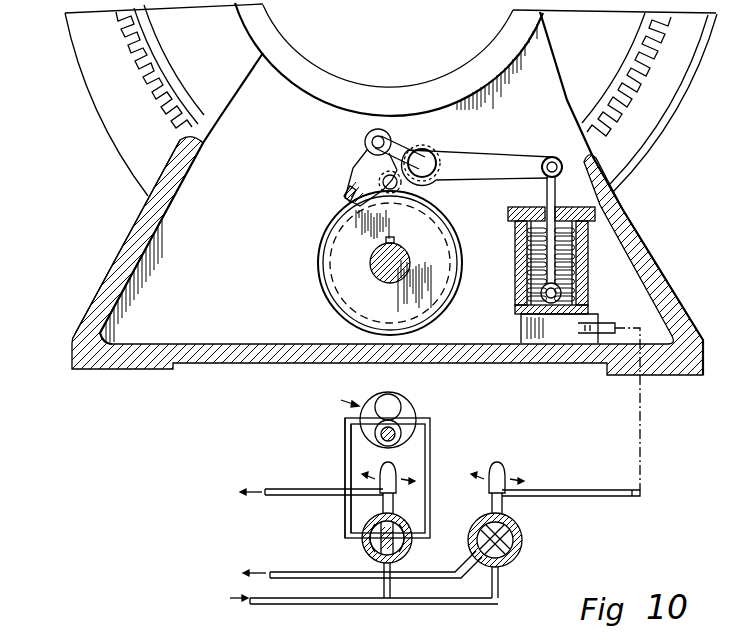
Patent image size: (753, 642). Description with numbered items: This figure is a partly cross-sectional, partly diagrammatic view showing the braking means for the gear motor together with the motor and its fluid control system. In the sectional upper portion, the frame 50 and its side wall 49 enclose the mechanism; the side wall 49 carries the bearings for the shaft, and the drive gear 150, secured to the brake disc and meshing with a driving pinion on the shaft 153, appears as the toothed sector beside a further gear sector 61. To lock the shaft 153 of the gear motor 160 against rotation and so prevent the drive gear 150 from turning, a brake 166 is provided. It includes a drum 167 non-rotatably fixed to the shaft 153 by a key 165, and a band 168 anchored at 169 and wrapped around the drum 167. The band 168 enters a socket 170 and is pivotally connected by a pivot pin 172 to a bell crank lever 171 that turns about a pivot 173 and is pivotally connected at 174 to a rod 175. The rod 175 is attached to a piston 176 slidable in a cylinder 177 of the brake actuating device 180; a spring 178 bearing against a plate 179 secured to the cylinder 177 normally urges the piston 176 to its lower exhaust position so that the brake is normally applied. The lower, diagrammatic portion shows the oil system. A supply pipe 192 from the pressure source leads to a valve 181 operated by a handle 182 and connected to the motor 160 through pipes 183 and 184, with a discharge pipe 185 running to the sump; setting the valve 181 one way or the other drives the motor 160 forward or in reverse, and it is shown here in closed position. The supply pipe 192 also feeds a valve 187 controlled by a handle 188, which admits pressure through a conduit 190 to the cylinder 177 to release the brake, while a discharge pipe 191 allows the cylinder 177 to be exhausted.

The side wall 49 is at (127, 262).
The frame 50 is at (143, 218).
The ring gear segment 61 is at (121, 100).
The drive gear 150 is at (157, 97).
The shaft 153 is at (405, 268).
The gear motor 160 is at (416, 403).
The key 165 is at (400, 238).
The brake 166 is at (380, 263).
The drum 167 is at (337, 287).
The band 168 is at (340, 195).
The anchor 169 is at (398, 187).
The socket 170 is at (387, 163).
The bell crank lever 171 is at (403, 148).
The pivot pin 172 is at (374, 138).
The pivot 173 is at (424, 162).
The pivotal connection 174 is at (553, 157).
The rod 175 is at (546, 193).
The piston 176 is at (520, 331).
The cylinder 177 is at (589, 268).
The spring 178 is at (571, 282).
The plate 179 is at (572, 208).
The brake actuating device 180 is at (587, 262).
The valve 181 is at (364, 549).
The handle 182 is at (385, 466).
The pipe 183 is at (431, 455).
The pipe 184 is at (344, 470).
The discharge pipe 185 is at (312, 492).
The valve 187 is at (525, 541).
The handle 188 is at (502, 471).
The conduit 190 is at (613, 327).
The discharge pipe 191 is at (420, 573).
The supply pipe 192 is at (283, 601).